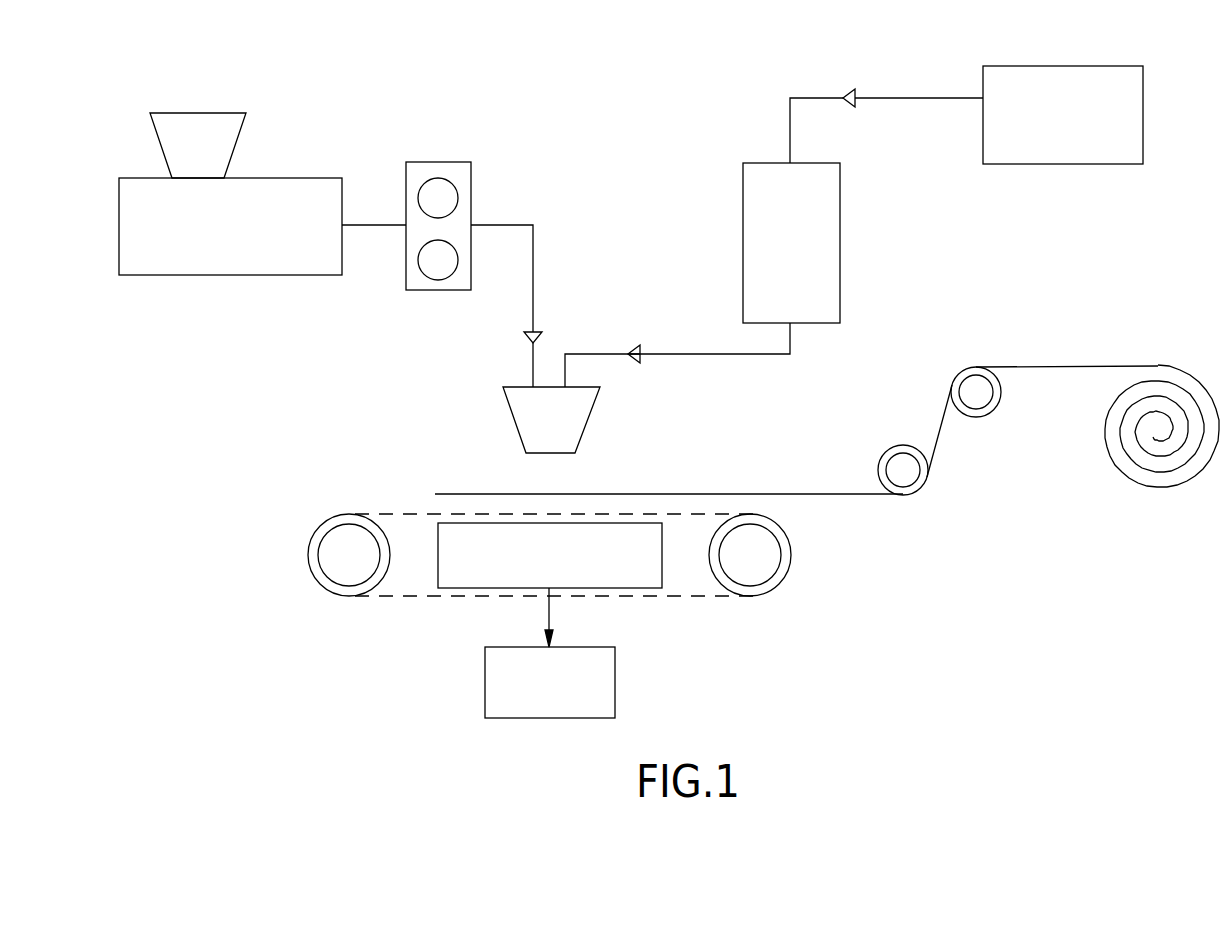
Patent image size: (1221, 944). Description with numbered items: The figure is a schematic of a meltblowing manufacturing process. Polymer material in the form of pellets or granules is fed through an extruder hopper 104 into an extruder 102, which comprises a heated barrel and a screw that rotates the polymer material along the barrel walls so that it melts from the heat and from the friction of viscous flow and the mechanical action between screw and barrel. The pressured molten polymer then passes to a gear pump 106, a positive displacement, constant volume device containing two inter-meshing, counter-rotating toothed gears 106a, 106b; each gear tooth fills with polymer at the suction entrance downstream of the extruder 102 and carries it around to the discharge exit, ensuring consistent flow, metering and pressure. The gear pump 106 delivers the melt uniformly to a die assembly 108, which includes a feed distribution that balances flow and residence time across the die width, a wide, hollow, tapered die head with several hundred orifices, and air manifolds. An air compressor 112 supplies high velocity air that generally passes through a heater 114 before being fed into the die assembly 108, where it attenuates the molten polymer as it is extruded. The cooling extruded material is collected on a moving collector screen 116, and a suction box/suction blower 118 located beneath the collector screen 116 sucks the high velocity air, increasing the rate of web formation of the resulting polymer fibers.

The extruder 102 is at (195, 275).
The extruder hopper 104 is at (186, 113).
The gear pump 106 is at (446, 136).
The toothed gear 106a is at (458, 200).
The toothed gear 106b is at (418, 262).
The die assembly 108 is at (512, 422).
The air compressor 112 is at (1048, 164).
The heater 114 is at (840, 228).
The collector screen 116 is at (640, 484).
The suction box/suction blower 118 is at (662, 565).